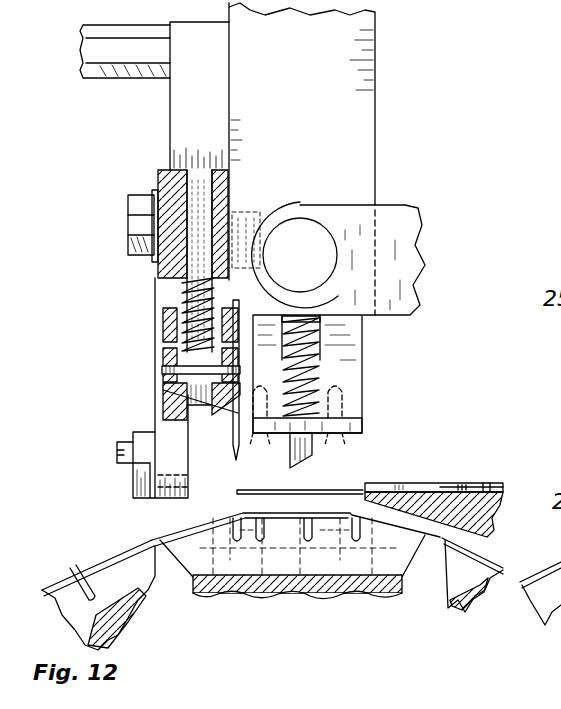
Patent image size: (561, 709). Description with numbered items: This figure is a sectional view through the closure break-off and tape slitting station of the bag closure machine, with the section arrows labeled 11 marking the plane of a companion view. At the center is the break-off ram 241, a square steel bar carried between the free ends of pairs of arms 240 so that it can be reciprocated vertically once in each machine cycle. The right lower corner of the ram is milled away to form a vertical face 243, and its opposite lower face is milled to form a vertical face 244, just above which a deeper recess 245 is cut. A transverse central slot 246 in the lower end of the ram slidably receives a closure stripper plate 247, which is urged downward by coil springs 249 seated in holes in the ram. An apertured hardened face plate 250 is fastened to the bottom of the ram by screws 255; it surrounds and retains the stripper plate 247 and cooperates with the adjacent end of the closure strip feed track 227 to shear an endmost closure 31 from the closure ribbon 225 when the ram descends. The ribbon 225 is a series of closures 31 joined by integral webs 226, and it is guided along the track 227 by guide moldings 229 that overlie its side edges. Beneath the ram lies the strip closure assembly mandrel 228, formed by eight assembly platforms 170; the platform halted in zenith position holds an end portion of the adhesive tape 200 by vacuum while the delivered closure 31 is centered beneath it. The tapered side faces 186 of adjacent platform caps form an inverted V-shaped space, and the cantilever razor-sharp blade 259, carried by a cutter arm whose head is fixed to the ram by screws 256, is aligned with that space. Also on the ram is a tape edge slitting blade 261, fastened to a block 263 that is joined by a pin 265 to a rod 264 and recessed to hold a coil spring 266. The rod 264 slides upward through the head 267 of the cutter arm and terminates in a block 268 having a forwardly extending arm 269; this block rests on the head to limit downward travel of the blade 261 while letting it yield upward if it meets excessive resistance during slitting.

The section line 11- 11 is at (75, 125).
The forwardly extending arm 269 is at (116, 73).
The block 268 is at (176, 130).
The break-off ram 241 is at (365, 97).
The plate 267 is at (188, 182).
The screws 256 is at (128, 227).
The coil spring 266 is at (180, 281).
The block 263 is at (163, 332).
The rod 264 is at (195, 352).
The pin 265 is at (168, 370).
The vertical face 244 is at (197, 416).
The cantilever razor-sharp blade 259 is at (150, 490).
The tape edge slitting blade 261 is at (233, 440).
The bag closure 31 is at (240, 490).
The arms 240 is at (405, 208).
The recess 245 is at (271, 262).
The transverse central slot 246 is at (306, 311).
The vertical face 243 is at (363, 367).
The coil springs 249 is at (320, 353).
The screws 255 is at (345, 405).
The face plate 250 is at (363, 426).
The closure stripper plate 247 is at (312, 447).
The ribbon 225 is at (407, 483).
The guide moldings 229 is at (418, 493).
The closure strip feed track 227 is at (462, 484).
The integral webs 226 is at (494, 484).
The assembly platform 170 is at (88, 616).
The side faces 186 is at (150, 580).
The adhesive tape 200 is at (119, 555).
The strip closure assembly mandrel 228 is at (78, 561).